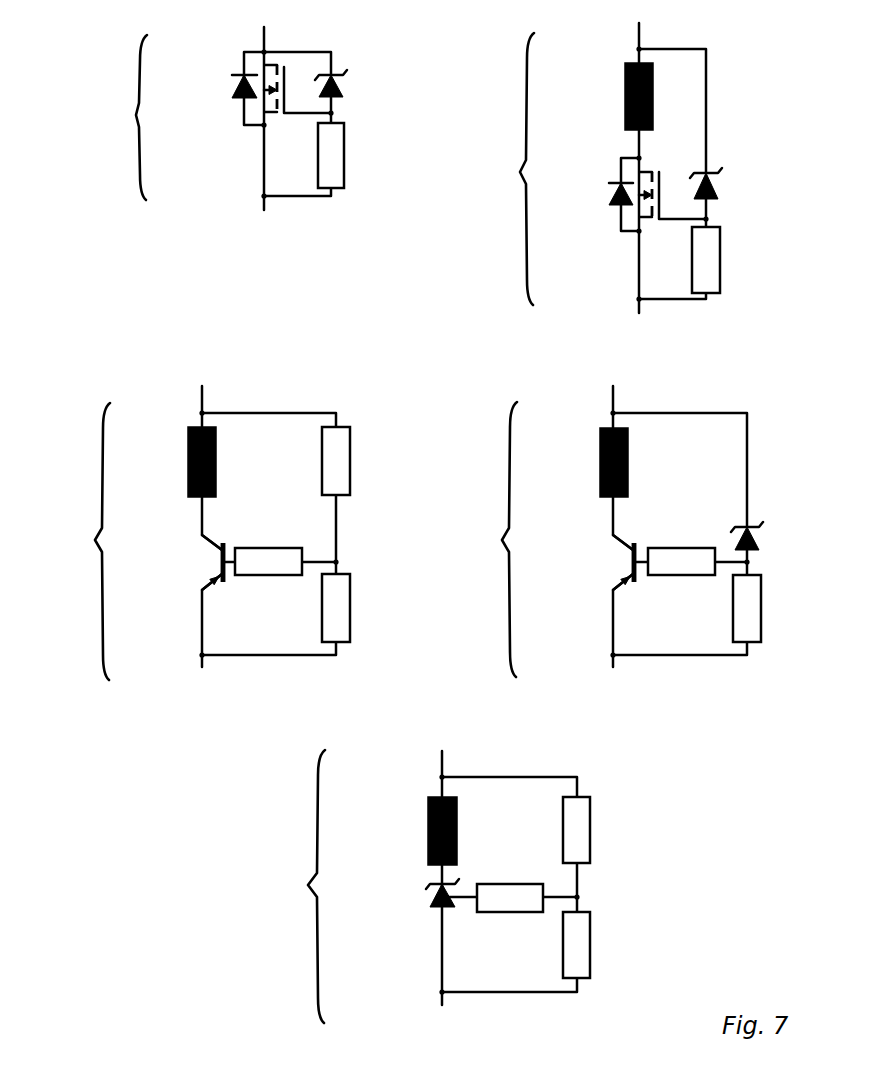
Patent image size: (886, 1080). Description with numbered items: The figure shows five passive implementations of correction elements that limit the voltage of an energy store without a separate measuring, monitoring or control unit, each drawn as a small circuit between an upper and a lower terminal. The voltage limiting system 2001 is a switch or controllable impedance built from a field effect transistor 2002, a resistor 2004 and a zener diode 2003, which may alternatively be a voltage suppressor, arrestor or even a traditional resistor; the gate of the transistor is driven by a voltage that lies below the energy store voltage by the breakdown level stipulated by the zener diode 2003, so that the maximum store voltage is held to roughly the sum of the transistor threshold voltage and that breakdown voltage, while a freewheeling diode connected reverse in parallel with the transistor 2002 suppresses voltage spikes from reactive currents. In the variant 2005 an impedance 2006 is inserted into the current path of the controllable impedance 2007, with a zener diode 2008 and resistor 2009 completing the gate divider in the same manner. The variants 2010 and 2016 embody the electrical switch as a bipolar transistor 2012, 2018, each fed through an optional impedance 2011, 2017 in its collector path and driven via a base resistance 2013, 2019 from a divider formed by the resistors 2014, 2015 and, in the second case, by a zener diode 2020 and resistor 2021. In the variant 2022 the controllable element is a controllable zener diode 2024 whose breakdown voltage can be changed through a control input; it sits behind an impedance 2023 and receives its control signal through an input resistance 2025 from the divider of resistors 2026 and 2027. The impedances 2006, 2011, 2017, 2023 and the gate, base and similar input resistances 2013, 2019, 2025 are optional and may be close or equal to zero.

The voltage limiting system 2001 is at (133, 117).
The field effect transistor 2002 is at (233, 87).
The zener diode 2003 is at (348, 83).
The resistor 2004 is at (347, 173).
The correction element with inserted impedance 2005 is at (515, 172).
The impedance 2006 is at (618, 81).
The controllable impedance 2007 is at (606, 190).
The zener diode 2008 is at (725, 194).
The resistor 2009 is at (724, 262).
The correction element with bipolar transistor 2010 is at (92, 544).
The impedance 2011 is at (187, 460).
The bipolar transistor 2012 is at (201, 561).
The base resistance 2013 is at (268, 541).
The resistor 2014 is at (353, 458).
The resistor 2015 is at (353, 609).
The correction element with bipolar transistor 2016 is at (498, 544).
The impedance 2017 is at (599, 460).
The bipolar transistor 2018 is at (613, 561).
The base resistance 2019 is at (679, 540).
The zener diode 2020 is at (764, 537).
The resistor 2021 is at (764, 609).
The correction element with controllable zener diode 2022 is at (305, 889).
The impedance 2023 is at (416, 826).
The controllable zener diode 2024 is at (416, 899).
The input resistance 2025 is at (503, 878).
The resistor 2026 is at (592, 835).
The resistor 2027 is at (592, 945).